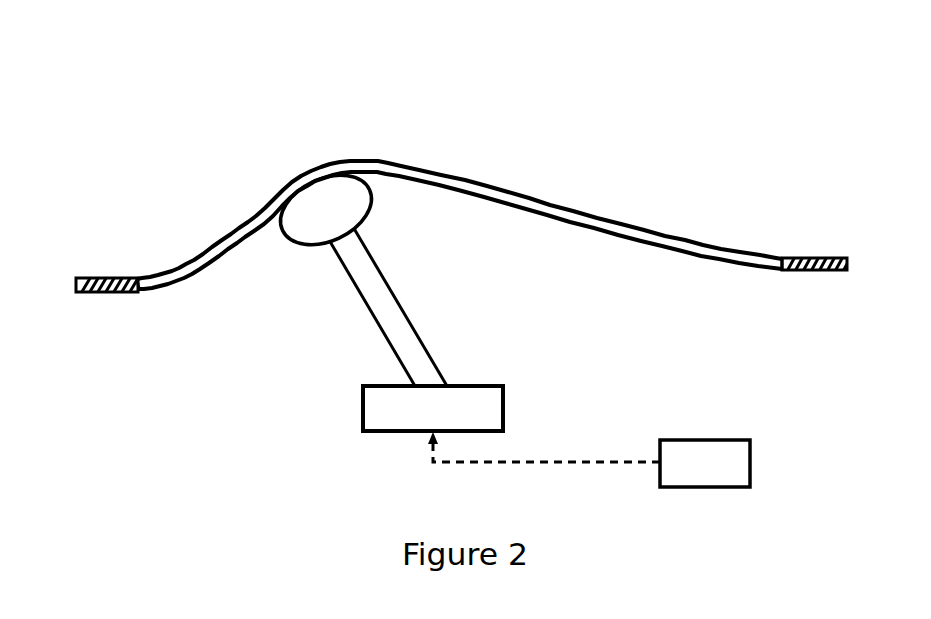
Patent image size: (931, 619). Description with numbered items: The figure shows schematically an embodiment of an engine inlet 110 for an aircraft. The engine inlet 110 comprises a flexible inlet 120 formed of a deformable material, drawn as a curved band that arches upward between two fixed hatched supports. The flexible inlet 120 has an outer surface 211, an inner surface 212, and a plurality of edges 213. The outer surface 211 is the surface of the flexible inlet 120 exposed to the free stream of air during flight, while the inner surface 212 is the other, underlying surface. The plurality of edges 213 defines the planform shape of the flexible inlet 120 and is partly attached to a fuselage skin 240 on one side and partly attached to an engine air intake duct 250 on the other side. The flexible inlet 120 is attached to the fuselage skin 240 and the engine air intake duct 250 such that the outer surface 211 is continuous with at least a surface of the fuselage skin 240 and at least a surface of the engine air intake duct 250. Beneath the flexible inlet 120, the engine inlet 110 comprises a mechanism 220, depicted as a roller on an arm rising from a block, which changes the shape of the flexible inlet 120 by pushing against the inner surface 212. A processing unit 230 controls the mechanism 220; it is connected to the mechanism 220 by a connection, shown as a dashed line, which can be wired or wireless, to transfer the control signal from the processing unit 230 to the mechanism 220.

The engine inlet 110 is at (198, 72).
The flexible inlet 120 is at (396, 126).
The outer surface 211 is at (645, 220).
The inner surface 212 is at (648, 258).
The plurality of edges 213 is at (137, 302).
The mechanism 220 is at (460, 315).
The processing unit 230 is at (589, 459).
The fuselage skin 240 is at (108, 264).
The engine air intake duct 250 is at (805, 247).